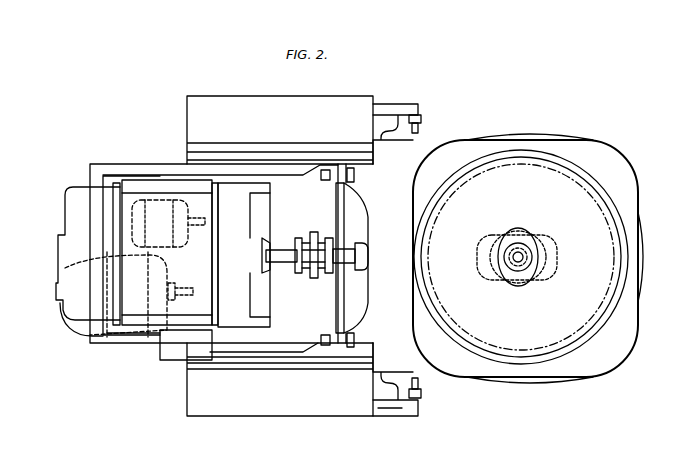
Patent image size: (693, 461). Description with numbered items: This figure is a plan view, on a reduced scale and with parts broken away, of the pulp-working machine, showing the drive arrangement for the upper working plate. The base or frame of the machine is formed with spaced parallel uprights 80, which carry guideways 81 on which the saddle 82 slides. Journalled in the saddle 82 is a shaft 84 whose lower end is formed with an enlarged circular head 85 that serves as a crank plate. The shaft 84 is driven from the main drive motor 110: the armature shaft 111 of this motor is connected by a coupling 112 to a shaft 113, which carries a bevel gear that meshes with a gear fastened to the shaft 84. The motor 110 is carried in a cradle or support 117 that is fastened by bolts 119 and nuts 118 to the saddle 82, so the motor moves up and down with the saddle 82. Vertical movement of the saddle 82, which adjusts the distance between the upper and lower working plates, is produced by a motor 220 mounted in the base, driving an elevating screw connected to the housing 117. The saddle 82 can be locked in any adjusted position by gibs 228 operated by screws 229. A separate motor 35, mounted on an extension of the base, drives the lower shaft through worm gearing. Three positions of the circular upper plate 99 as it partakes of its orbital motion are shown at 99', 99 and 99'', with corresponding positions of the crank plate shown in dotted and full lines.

The uprights 80 is at (258, 103).
The guideways 81 is at (381, 122).
The saddle 82 is at (563, 148).
The shaft 84 is at (516, 270).
The enlarged head 85 is at (515, 232).
The circular upper plate 99 is at (521, 241).
The circular upper plate position 99' is at (521, 235).
The circular upper plate position 99'' is at (521, 257).
The main drive motor 110 is at (76, 226).
The armature shaft 111 is at (278, 250).
The coupling 112 is at (315, 277).
The shaft 113 is at (350, 246).
The cradle or support 117 is at (139, 338).
The nuts 118 is at (325, 338).
The bolts 119 is at (355, 338).
The motor 220 is at (160, 233).
The gibs 228 is at (402, 408).
The screws 229 is at (423, 396).
The motor 35 is at (82, 320).